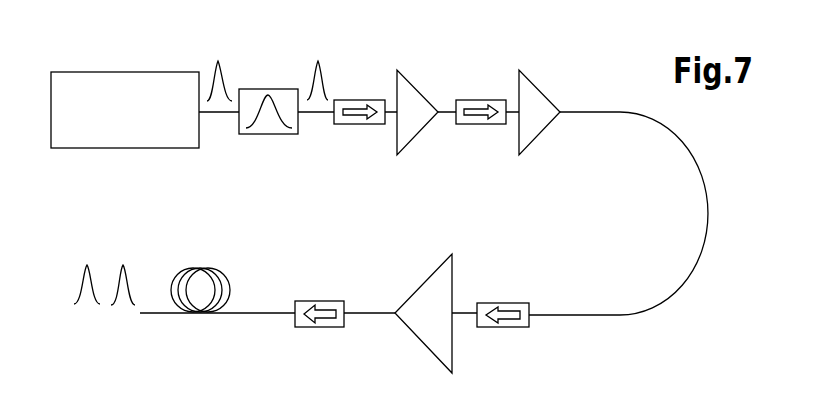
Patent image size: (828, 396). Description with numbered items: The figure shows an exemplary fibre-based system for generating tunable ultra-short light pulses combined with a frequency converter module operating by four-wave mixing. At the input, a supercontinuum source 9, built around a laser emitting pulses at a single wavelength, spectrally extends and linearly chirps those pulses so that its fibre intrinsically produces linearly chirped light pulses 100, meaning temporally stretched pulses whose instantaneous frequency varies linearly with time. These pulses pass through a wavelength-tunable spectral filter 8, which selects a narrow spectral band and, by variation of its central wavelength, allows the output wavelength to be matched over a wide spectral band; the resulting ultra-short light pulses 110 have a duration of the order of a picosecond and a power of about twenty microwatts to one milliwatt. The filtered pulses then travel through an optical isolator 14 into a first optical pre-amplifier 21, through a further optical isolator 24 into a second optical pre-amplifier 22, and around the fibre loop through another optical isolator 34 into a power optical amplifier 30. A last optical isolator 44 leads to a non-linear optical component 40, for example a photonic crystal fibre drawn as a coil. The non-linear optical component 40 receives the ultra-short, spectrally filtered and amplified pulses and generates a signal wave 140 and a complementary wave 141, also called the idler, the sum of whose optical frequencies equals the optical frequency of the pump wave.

The supercontinuum source 9 is at (131, 121).
The linearly chirped light pulses 100 is at (226, 72).
The wavelength-tunable spectral filter 8 is at (277, 135).
The ultra-short light pulses 110 is at (330, 71).
The optical isolator 14 is at (360, 126).
The first optical pre-amplifier 21 is at (422, 90).
The optical isolator 24 is at (490, 126).
The second optical pre-amplifier 22 is at (540, 94).
The optical isolator 34 is at (516, 302).
The power optical amplifier 30 is at (455, 278).
The optical isolator 44 is at (333, 300).
The non-linear optical component 40 is at (205, 267).
The signal wave 140 is at (80, 277).
The complementary wave 141 is at (110, 277).